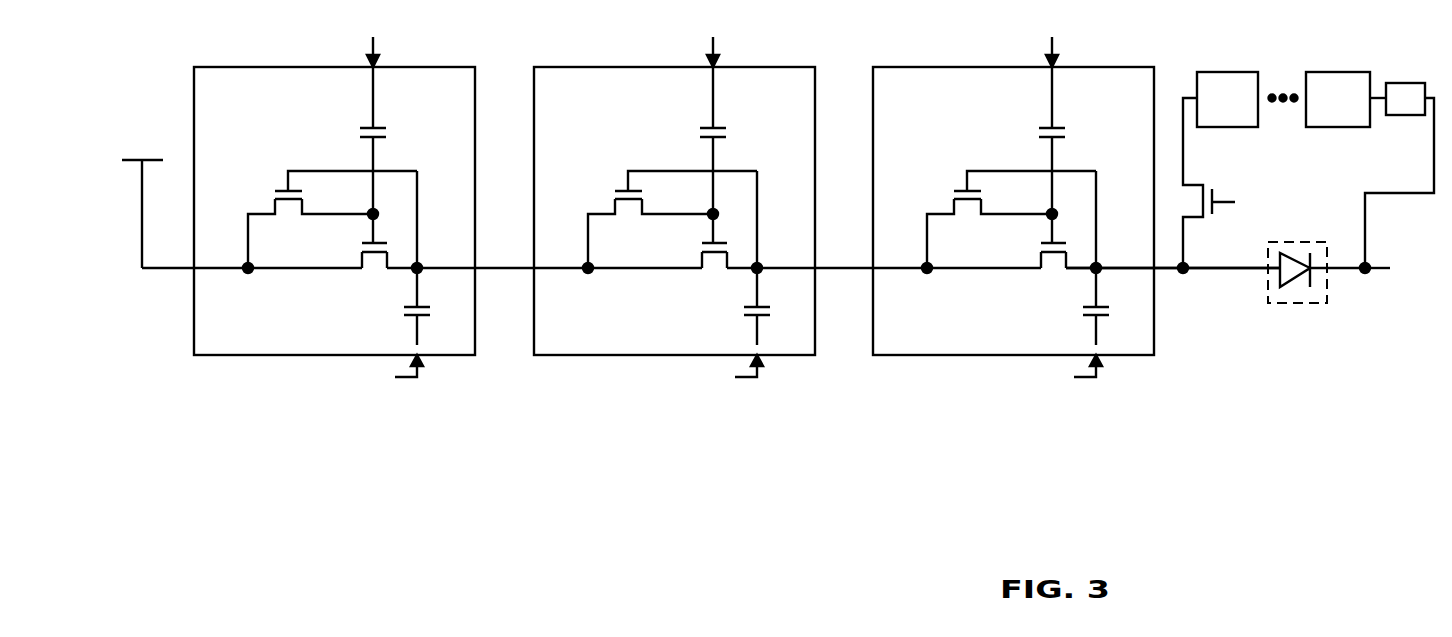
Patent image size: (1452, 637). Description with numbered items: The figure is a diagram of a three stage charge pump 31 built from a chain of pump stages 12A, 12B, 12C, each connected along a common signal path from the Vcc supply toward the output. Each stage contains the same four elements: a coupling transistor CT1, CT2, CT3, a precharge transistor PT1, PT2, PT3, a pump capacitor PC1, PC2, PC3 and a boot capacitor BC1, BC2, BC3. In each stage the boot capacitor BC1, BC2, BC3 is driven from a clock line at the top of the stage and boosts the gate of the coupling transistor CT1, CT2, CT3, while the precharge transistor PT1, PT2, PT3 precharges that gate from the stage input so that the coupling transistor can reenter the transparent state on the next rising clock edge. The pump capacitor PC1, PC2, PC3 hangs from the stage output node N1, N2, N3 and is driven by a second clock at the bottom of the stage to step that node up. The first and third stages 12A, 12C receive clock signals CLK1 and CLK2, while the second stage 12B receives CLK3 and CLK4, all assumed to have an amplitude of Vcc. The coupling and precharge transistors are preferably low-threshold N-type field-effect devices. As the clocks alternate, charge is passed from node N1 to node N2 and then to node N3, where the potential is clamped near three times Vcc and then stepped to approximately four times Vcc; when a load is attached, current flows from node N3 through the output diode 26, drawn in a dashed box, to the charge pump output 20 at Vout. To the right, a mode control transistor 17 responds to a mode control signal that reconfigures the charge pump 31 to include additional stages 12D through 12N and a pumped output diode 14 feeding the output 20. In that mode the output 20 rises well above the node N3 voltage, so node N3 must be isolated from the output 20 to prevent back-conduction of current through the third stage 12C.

The pump stage 12A is at (422, 200).
The pump stage 12B is at (787, 200).
The pump stage 12C is at (1076, 200).
The additional stage 12D is at (1222, 72).
The additional stage 12N is at (1346, 72).
The pumped output diode 14 is at (1405, 83).
The mode control transistor 17 is at (1270, 185).
The charge pump output 20 is at (1382, 276).
The output diode 26 is at (1280, 305).
The charge pump 31 is at (165, 301).
The boot capacitor BC1 is at (396, 155).
The boot capacitor BC2 is at (736, 155).
The boot capacitor BC3 is at (1075, 155).
The precharge transistor PT1 is at (323, 222).
The precharge transistor PT2 is at (663, 222).
The precharge transistor PT3 is at (1002, 222).
The coupling transistor CT1 is at (351, 251).
The coupling transistor CT2 is at (691, 251).
The coupling transistor CT3 is at (1030, 251).
The pump capacitor PC1 is at (395, 321).
The pump capacitor PC2 is at (735, 321).
The pump capacitor PC3 is at (1074, 321).
The node N1 is at (439, 239).
The node N2 is at (779, 239).
The node N3 is at (1118, 239).